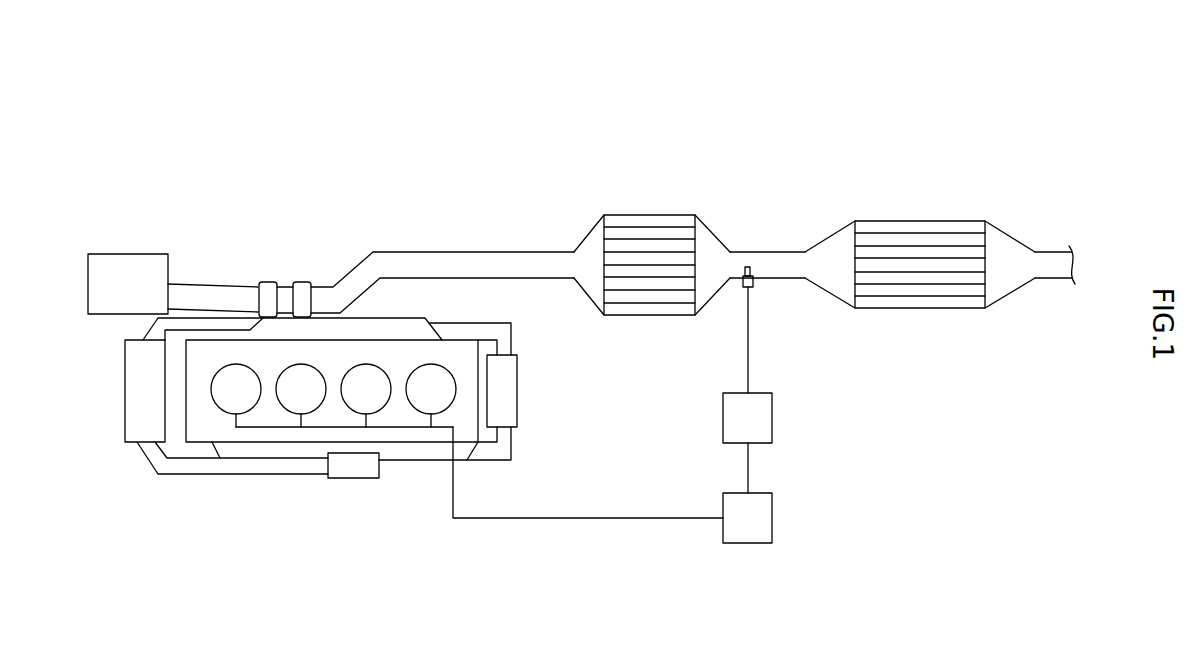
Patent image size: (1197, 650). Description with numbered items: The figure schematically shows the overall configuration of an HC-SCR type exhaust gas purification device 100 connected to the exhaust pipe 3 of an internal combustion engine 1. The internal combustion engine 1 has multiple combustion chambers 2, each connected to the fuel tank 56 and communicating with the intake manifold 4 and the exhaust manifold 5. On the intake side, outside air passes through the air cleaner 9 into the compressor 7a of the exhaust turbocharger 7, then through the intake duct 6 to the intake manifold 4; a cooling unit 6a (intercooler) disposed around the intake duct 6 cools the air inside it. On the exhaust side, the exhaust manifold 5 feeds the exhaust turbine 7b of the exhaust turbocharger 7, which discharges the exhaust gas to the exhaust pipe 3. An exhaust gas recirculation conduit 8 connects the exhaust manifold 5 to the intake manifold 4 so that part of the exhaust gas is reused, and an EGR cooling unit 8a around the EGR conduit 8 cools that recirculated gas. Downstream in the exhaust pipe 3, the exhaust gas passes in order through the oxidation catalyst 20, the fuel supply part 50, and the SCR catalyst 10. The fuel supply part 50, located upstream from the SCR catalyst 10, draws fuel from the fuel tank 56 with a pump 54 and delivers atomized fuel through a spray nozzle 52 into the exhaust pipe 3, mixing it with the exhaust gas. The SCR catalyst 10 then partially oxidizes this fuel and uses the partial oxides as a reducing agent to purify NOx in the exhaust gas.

The exhaust gas purification device 100 is at (766, 94).
The internal combustion engine 1 is at (434, 312).
The combustion chamber 2 is at (224, 416).
The exhaust pipe 3 is at (426, 254).
The intake manifold 4 is at (405, 448).
The exhaust manifold 5 is at (398, 330).
The intake duct 6 is at (302, 468).
The cooling unit (intercooler) 6a is at (133, 399).
The exhaust turbocharger 7 is at (289, 256).
The compressor 7a is at (265, 280).
The exhaust turbine 7b is at (307, 281).
The exhaust gas recirculation conduit (EGR conduit) 8 is at (505, 338).
The EGR cooling unit 8a is at (508, 399).
The air cleaner 9 is at (133, 258).
The SCR catalyst 10 is at (965, 214).
The oxidation catalyst 20 is at (668, 210).
The fuel supply part 50 is at (771, 405).
The spray nozzle 52 is at (740, 288).
The pump 54 is at (772, 425).
The fuel tank 56 is at (772, 528).